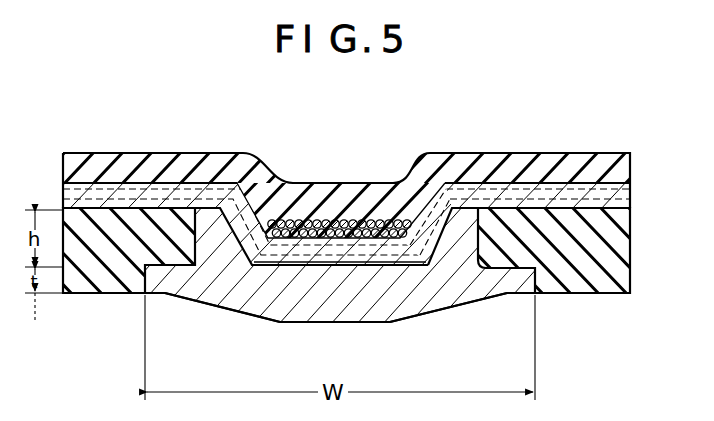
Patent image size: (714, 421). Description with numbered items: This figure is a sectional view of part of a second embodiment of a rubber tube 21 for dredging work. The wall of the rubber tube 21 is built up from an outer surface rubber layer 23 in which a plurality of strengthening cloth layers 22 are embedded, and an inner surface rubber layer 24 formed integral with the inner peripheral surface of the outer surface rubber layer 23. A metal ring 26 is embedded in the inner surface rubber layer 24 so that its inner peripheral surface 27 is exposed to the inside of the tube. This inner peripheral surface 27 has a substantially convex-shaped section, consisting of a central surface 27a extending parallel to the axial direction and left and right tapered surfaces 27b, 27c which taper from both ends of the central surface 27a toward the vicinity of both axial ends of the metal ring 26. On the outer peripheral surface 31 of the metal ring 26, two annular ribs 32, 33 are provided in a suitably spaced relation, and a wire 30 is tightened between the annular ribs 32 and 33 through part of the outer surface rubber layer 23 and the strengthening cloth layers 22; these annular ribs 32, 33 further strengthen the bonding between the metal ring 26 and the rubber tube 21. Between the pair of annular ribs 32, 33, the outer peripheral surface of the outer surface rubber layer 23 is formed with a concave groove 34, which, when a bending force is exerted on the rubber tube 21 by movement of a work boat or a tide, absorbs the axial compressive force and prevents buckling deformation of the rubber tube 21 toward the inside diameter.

The rubber tube 21 is at (181, 151).
The strengthening cloth layers 22 is at (581, 195).
The outer surface rubber layer 23 is at (537, 152).
The inner surface rubber layer 24 is at (95, 286).
The metal ring 26 is at (381, 314).
The inner peripheral surface 27 is at (355, 326).
The central surface 27a is at (305, 323).
The left tapered surface 27b is at (228, 312).
The right tapered surface 27c is at (465, 309).
The wire 30 is at (371, 219).
The outer peripheral surface 31 is at (305, 266).
The annular rib 32 is at (214, 218).
The annular rib 33 is at (464, 218).
The concave groove 34 is at (323, 181).